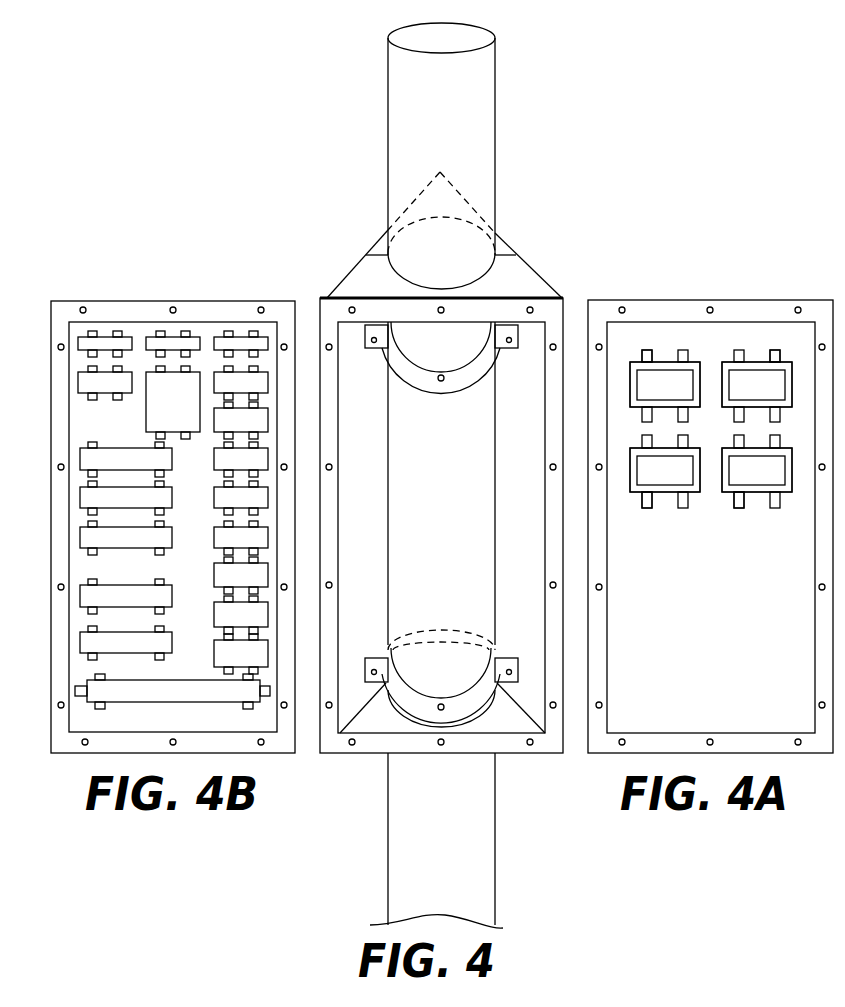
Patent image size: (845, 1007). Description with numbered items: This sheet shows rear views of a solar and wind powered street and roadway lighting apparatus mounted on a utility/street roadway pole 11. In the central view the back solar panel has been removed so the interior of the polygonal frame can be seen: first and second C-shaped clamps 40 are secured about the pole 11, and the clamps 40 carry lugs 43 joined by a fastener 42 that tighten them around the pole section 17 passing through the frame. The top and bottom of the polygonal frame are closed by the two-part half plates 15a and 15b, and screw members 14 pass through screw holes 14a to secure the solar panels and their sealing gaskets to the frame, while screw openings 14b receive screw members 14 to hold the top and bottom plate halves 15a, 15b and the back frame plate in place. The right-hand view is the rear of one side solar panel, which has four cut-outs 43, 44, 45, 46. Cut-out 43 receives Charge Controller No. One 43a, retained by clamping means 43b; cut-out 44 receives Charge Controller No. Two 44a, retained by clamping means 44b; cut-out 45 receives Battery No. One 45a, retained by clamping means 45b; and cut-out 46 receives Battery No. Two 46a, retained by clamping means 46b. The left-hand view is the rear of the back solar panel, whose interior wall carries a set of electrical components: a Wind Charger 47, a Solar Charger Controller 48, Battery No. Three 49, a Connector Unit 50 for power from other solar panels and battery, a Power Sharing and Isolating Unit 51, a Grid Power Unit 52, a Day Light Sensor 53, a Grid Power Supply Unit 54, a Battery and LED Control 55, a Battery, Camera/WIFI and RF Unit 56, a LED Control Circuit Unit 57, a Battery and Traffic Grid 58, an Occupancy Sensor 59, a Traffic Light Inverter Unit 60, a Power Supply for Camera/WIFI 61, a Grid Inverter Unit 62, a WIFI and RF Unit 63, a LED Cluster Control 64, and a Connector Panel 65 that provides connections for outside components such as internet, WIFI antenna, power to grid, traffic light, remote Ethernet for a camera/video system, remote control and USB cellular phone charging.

In FIG. 4, the utility/street roadway pole 11 is at (436, 475).
In FIG. 4, the pole end section 17 is at (441, 472).
In FIG. 4, the top half plate 15a is at (522, 795).
In FIG. 4, the bottom half plate 15b is at (455, 205).
In FIG. 4, the screw holes 14a is at (329, 344).
In FIG. 4, the C-shaped clamps 40 is at (462, 385).
In FIG. 4, the clamp fastener 42 is at (441, 382).
In FIG. 4, the cut-out 43 is at (374, 349).
In FIG. 4A, the cut-out 43 is at (658, 362).
In FIG. 4A, the screw members 14 is at (599, 344).
In FIG. 4A, the Charge Controller No. 1 43a is at (665, 386).
In FIG. 4A, the clamping means 43b is at (641, 356).
In FIG. 4A, the cut-out 44 is at (752, 362).
In FIG. 4A, the Charge Controller No. 2 44a is at (757, 386).
In FIG. 4A, the clamping means 44b is at (781, 357).
In FIG. 4A, the cut-out 45 is at (658, 449).
In FIG. 4A, the Battery No. 1 45a is at (665, 471).
In FIG. 4A, the clamping means 45b is at (647, 509).
In FIG. 4A, the cut-out 46 is at (755, 449).
In FIG. 4A, the Battery No. 2 46a is at (757, 471).
In FIG. 4A, the clamping means 46b is at (739, 509).
In FIG. 4B, the screw openings 14b is at (84, 307).
In FIG. 4B, the Wind Charger 47 is at (78, 344).
In FIG. 4B, the Solar Charger Controller 48 is at (172, 338).
In FIG. 4B, the Battery No. 3 49 is at (243, 338).
In FIG. 4B, the Connector Unit for Power from other Solar Panels and Battery 50 is at (110, 400).
In FIG. 4B, the Power Sharing and Isolating Unit 51 is at (173, 402).
In FIG. 4B, the Grid Power Unit 52 is at (268, 385).
In FIG. 4B, the Day Light Sensor 53 is at (268, 422).
In FIG. 4B, the Grid Power Supply Unit 54 is at (214, 460).
In FIG. 4B, the Battery and LED Control 55 is at (80, 459).
In FIG. 4B, the Battery, Camera/WIFI and RF Unit 56 is at (80, 497).
In FIG. 4B, the LED Control Circuit Unit 57 is at (214, 498).
In FIG. 4B, the Battery and Traffic Grid 58 is at (80, 537).
In FIG. 4B, the Occupancy Sensor 59 is at (214, 537).
In FIG. 4B, the Traffic Light Inverter Unit 60 is at (80, 591).
In FIG. 4B, the Power Supply for Camera/WIFI 61 is at (214, 576).
In FIG. 4B, the Grid Inverter Unit 62 is at (80, 642).
In FIG. 4B, the WIFI and RF Unit 63 is at (214, 615).
In FIG. 4B, the LED Cluster Control 64 is at (214, 656).
In FIG. 4B, the Connector Panel 65 is at (87, 687).